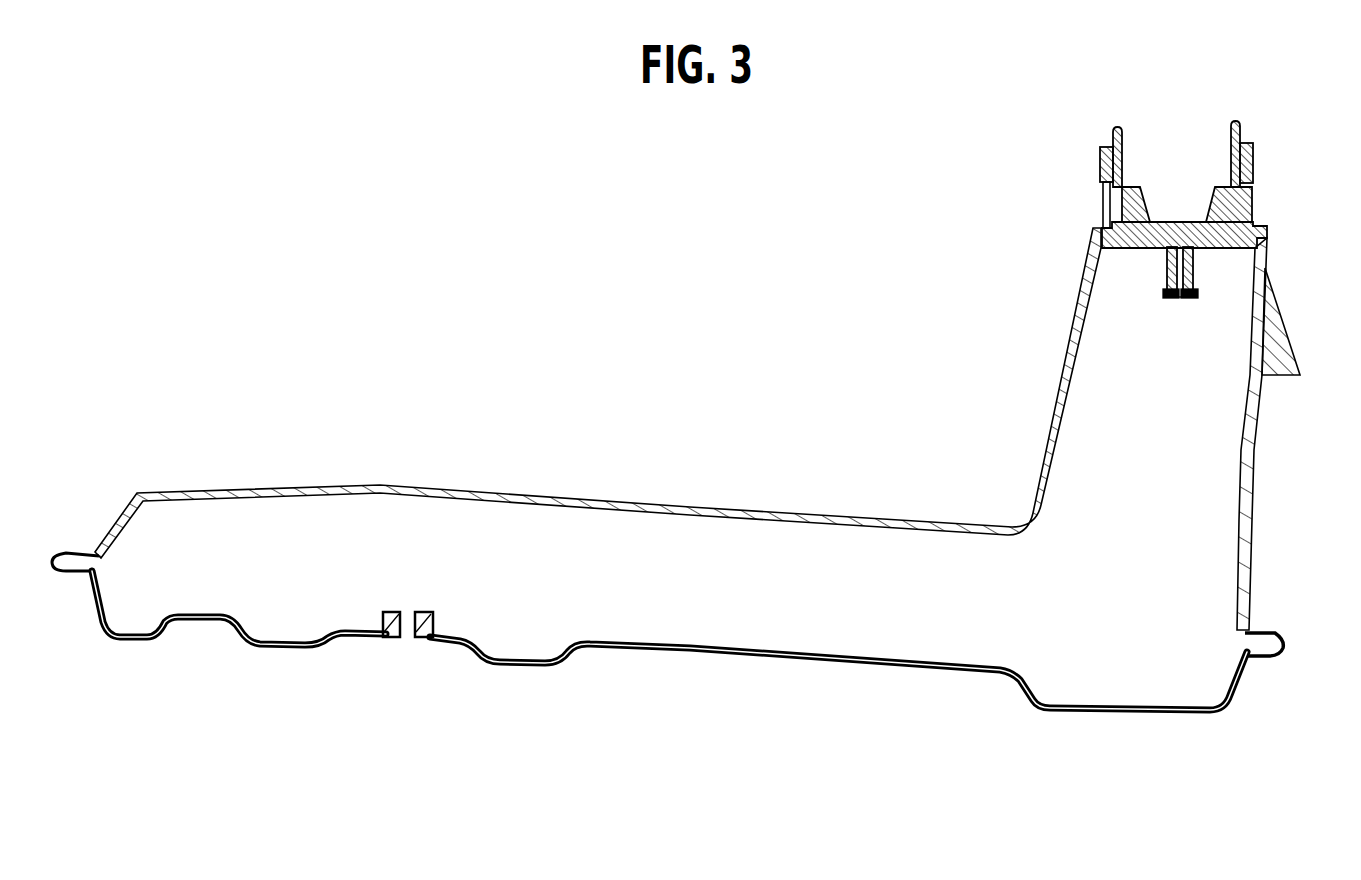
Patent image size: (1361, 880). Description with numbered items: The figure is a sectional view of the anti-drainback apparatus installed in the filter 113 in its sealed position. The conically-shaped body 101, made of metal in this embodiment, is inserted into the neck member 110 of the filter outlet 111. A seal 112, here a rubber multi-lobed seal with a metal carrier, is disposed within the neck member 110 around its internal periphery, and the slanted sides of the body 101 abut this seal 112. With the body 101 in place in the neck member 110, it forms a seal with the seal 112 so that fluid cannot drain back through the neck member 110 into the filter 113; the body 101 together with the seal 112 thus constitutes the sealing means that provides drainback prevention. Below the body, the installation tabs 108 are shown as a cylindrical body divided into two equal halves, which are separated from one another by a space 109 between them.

The conically-shaped body 101 is at (1141, 198).
The installation tabs 108 is at (1166, 275).
The space 109 is at (1181, 300).
The neck member 110 is at (1104, 200).
The filter outlet 111 is at (1112, 128).
The seal 112 is at (1121, 210).
The filter 113 is at (1076, 323).